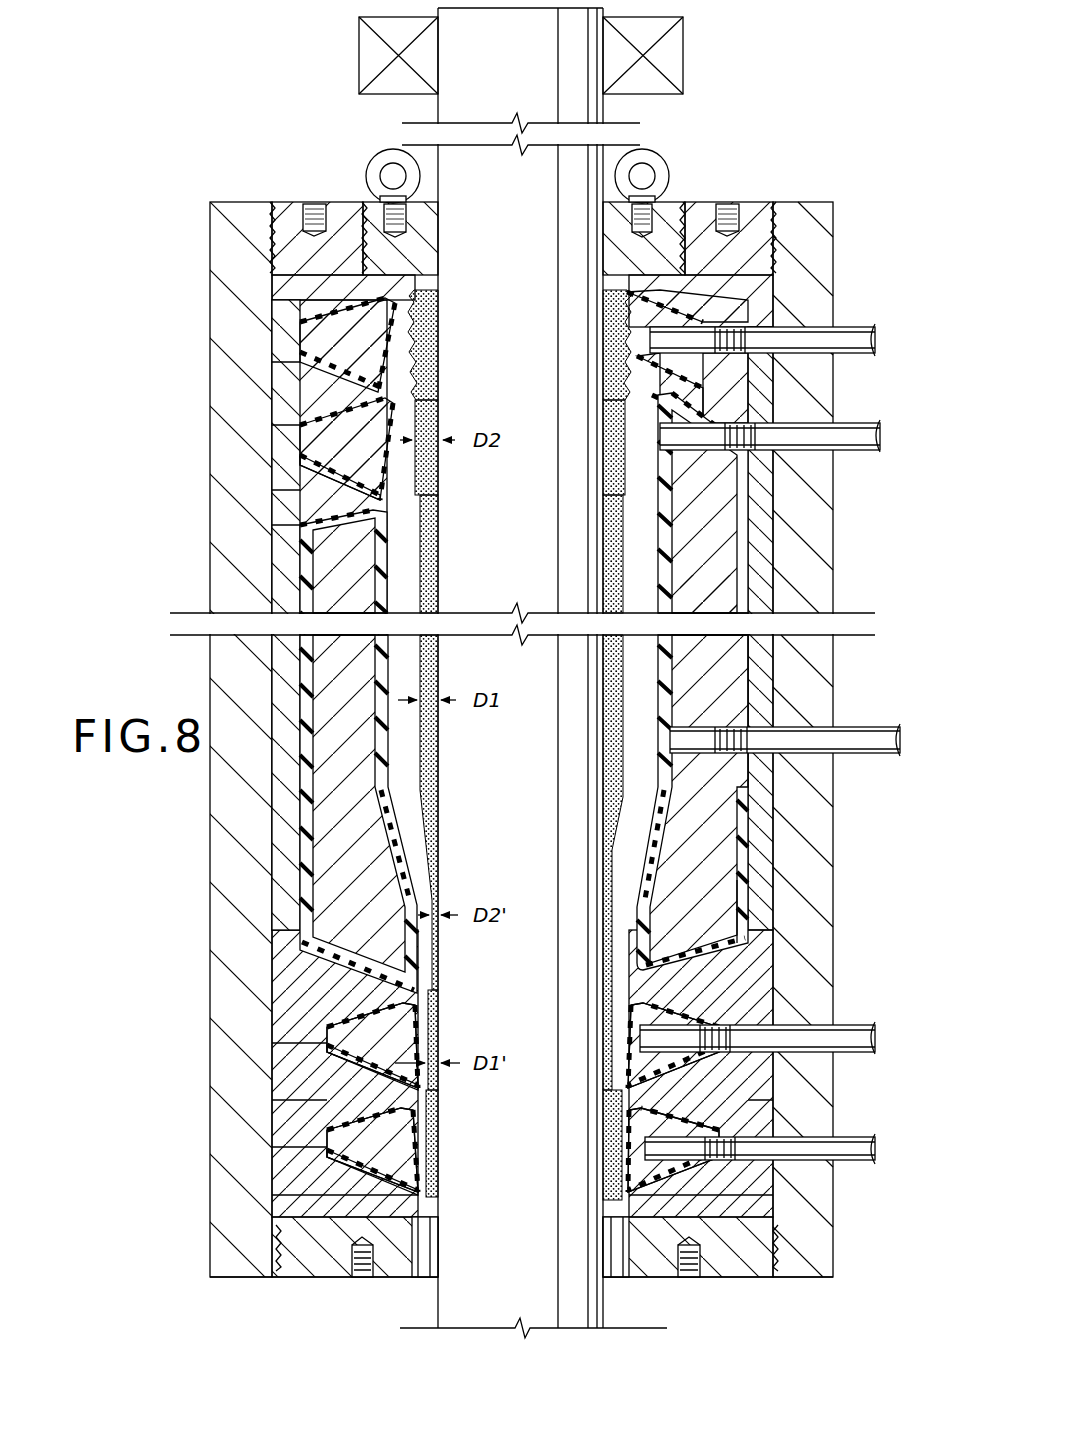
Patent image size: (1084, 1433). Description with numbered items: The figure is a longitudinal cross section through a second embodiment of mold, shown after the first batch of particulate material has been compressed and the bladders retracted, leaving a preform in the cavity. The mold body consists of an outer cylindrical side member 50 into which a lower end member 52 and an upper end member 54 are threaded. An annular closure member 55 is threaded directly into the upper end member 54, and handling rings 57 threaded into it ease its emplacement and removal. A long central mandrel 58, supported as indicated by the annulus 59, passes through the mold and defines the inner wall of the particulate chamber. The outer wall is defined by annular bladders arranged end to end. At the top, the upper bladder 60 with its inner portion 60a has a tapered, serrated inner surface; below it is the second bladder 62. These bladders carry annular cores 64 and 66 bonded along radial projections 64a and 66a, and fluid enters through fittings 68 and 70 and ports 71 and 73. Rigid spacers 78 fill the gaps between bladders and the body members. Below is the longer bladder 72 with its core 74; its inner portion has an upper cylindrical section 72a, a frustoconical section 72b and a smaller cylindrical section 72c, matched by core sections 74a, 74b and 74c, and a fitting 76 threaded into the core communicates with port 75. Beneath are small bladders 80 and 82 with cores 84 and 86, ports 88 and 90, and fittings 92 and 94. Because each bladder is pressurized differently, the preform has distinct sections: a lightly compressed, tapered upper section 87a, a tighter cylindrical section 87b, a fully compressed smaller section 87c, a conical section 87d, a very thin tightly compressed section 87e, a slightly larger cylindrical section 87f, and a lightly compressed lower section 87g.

The outer cylindrical side member 50 is at (205, 470).
The lower end member 52 is at (332, 1270).
The upper end member 54 is at (288, 232).
The annular closure member 55 is at (395, 222).
The handling rings 57 is at (395, 165).
The central mandrel 58 is at (524, 226).
The annulus 59 is at (665, 45).
The upper bladder 60 is at (305, 345).
The inner portion of bladder 60 60a is at (640, 300).
The second bladder 62 is at (320, 435).
The annular core 64 is at (345, 325).
The radial projection 64a is at (790, 270).
The annular core 66 is at (335, 452).
The radial projection 66a is at (720, 425).
The fitting 68 is at (790, 330).
The fitting 70 is at (760, 460).
The port 71 is at (640, 345).
The longer bladder 72 is at (320, 560).
The upper cylindrical section of bladder 72 72a is at (660, 605).
The frustoconical section of bladder 72 72b is at (650, 815).
The smaller diameter cylindrical section of bladder 72 72c is at (650, 985).
The port 73 is at (650, 455).
The core 74 is at (335, 840).
The upper cylindrical section of core 74 74a is at (660, 575).
The frustoconical section of core 74 74b is at (680, 845).
The smaller diameter cylindrical section of core 74 74c is at (640, 925).
The port 75 is at (660, 760).
The fitting 76 is at (780, 725).
The rigid spacers 78 is at (288, 290).
The small bladder 80 is at (305, 1065).
The small bladder 82 is at (330, 1140).
The core 84 is at (355, 1040).
The core 86 is at (320, 1155).
The upper section of preform 87a is at (440, 375).
The preform section 87b is at (432, 413).
The preform section 87c is at (440, 540).
The conical section of preform 87d is at (440, 840).
The preform section 87e is at (440, 962).
The cylindrical section of preform 87f is at (440, 1003).
The preform section 87g is at (440, 1128).
The port 88 is at (630, 1070).
The port 90 is at (630, 1150).
The fitting 92 is at (750, 1030).
The fitting 94 is at (755, 1145).